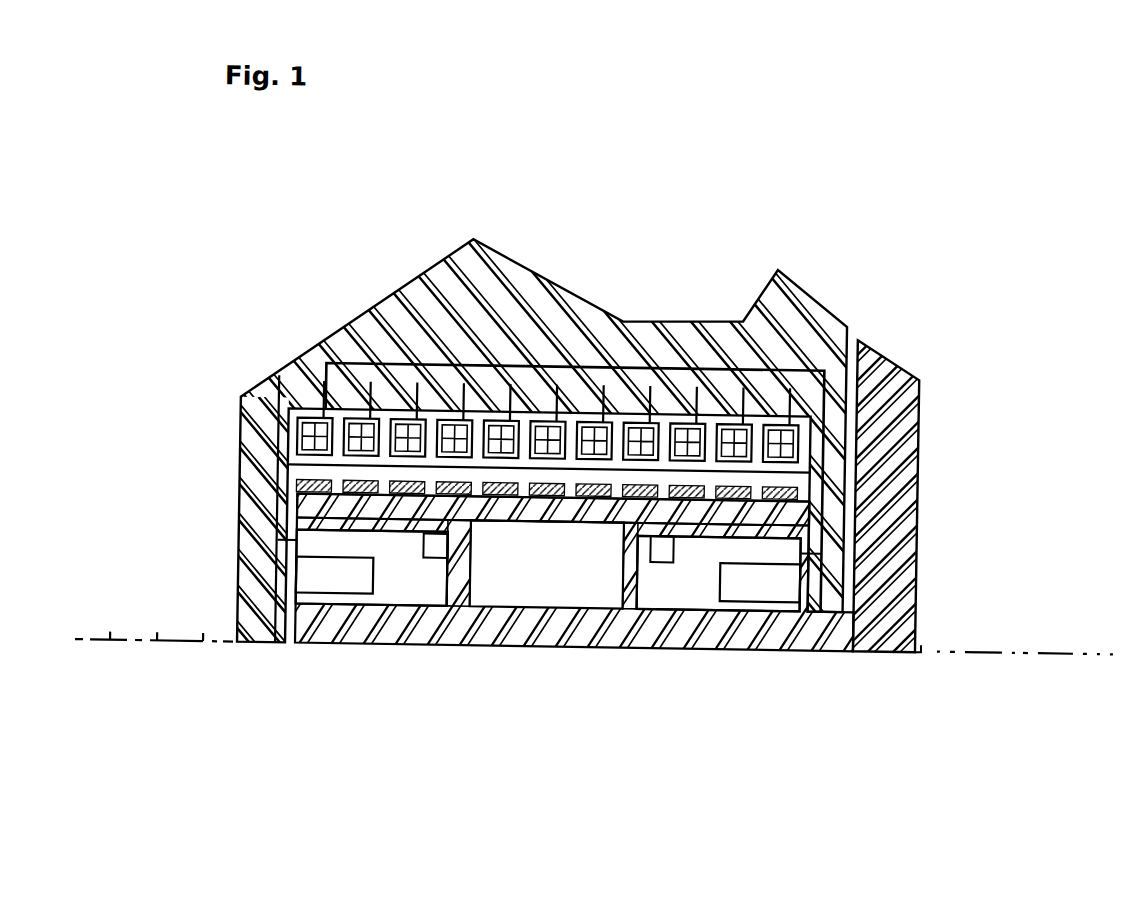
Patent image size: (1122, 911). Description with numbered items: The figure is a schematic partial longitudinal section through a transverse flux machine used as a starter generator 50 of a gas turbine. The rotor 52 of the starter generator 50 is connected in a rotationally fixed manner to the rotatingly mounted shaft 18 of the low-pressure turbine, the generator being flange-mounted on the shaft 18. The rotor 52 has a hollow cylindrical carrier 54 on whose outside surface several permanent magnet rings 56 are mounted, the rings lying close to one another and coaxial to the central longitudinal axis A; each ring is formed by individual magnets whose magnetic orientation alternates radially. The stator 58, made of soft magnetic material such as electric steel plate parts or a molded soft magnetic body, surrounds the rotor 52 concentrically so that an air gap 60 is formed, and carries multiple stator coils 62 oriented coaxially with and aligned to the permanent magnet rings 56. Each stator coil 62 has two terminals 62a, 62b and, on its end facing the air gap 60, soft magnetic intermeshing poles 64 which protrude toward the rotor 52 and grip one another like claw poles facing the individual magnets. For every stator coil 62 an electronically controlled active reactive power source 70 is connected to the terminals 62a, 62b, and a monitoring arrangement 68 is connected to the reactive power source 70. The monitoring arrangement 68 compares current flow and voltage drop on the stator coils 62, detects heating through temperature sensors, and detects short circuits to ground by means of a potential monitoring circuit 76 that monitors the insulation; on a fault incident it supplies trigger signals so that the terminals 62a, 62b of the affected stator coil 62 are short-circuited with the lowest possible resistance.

The shaft 18 is at (881, 351).
The starter generator 50 is at (394, 686).
The rotor 52 is at (625, 524).
The hollow cylindrical carrier 54 is at (582, 462).
The permanent magnet rings 56 is at (743, 497).
The stator 58 is at (426, 507).
The air gap 60 is at (321, 602).
The stator coils 62 is at (384, 477).
The terminal 62a is at (318, 396).
The terminal 62b is at (291, 421).
The poles 64 is at (476, 499).
The monitoring arrangement 68 is at (779, 580).
The active reactive power source 70 is at (692, 590).
The potential monitoring circuit 76 is at (629, 574).
The central longitudinal axis A is at (967, 649).